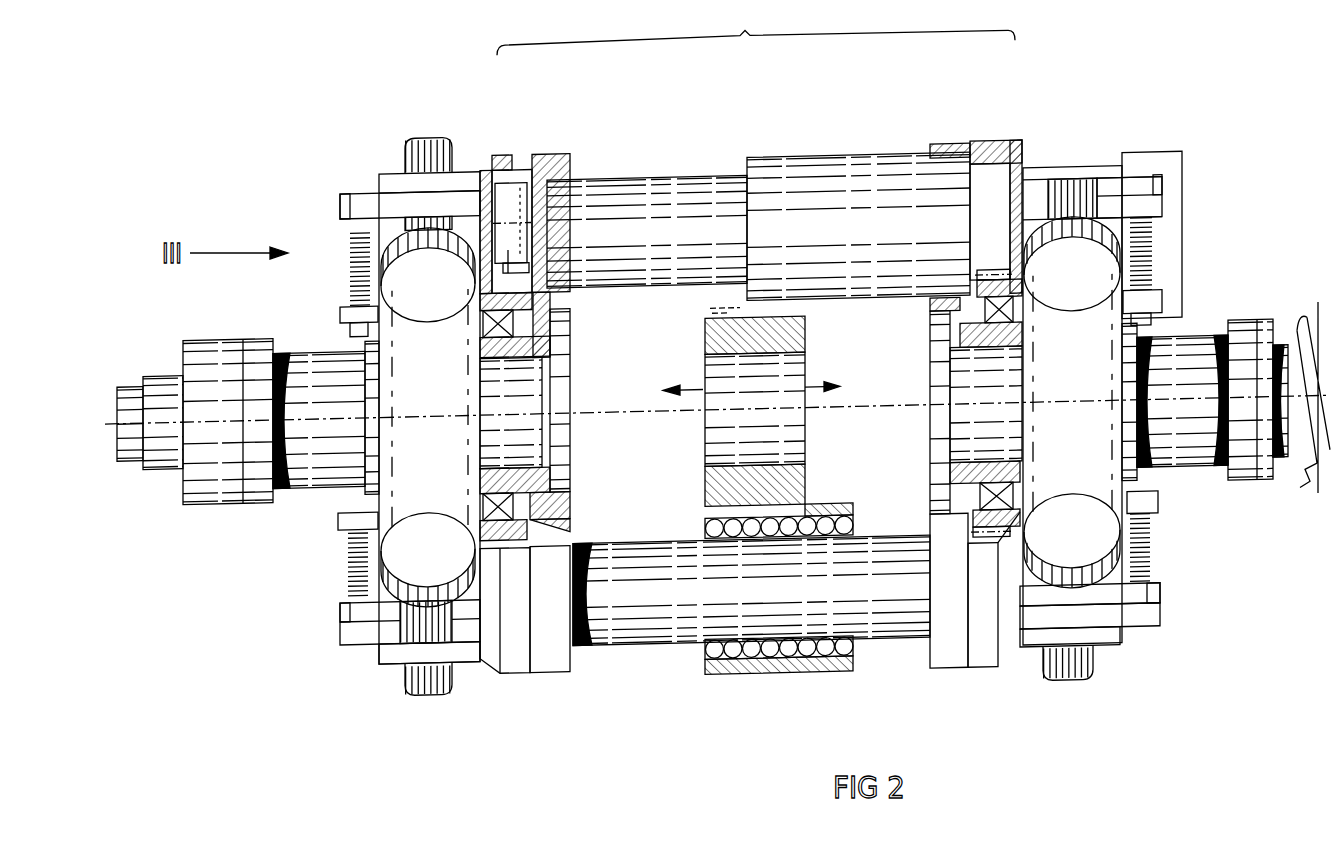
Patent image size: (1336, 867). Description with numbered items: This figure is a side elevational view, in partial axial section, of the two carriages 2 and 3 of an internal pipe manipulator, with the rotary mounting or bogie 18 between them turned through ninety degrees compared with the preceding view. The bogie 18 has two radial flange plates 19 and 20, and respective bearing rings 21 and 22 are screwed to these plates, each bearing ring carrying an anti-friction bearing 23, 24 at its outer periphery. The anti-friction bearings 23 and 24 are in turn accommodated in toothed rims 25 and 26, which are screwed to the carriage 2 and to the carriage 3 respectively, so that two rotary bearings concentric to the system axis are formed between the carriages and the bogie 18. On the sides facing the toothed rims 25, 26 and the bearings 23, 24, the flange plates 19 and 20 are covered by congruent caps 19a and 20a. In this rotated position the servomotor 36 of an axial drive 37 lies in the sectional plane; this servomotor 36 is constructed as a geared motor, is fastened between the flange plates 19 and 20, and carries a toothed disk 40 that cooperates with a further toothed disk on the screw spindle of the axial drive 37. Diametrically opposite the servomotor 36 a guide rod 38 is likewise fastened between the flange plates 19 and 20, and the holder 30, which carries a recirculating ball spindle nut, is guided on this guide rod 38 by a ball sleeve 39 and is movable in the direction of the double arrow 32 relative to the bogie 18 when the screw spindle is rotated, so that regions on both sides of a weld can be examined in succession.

The carriage 2 is at (435, 407).
The carriage 3 is at (1079, 404).
The rotary mounting or bogie 18 is at (758, 38).
The flange plate 19 is at (550, 680).
The cap 19a is at (508, 682).
The flange plate 20 is at (947, 680).
The cap 20a is at (983, 680).
The bearing ring 21 is at (552, 387).
The bearing ring 22 is at (1020, 391).
The anti-friction bearing 23 is at (542, 404).
The anti-friction bearing 24 is at (1023, 342).
The toothed rim 25 is at (548, 275).
The toothed rim 26 is at (993, 291).
The holder 30 is at (705, 506).
The double arrow 32 is at (750, 408).
The servomotor 36 is at (763, 188).
The axial drive 37 is at (830, 160).
The guide rod 38 is at (640, 645).
The ball sleeve 39 is at (803, 674).
The toothed disk 40 is at (507, 219).